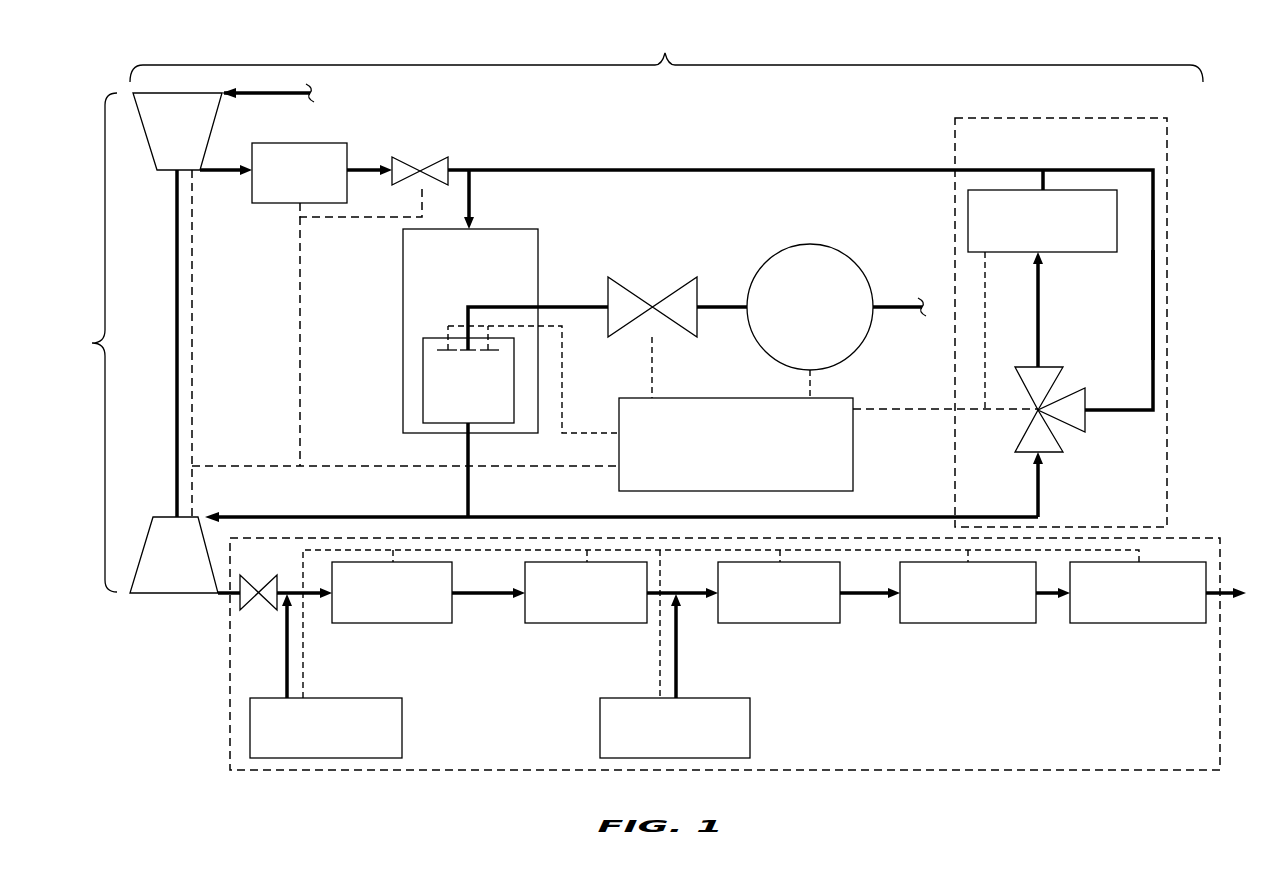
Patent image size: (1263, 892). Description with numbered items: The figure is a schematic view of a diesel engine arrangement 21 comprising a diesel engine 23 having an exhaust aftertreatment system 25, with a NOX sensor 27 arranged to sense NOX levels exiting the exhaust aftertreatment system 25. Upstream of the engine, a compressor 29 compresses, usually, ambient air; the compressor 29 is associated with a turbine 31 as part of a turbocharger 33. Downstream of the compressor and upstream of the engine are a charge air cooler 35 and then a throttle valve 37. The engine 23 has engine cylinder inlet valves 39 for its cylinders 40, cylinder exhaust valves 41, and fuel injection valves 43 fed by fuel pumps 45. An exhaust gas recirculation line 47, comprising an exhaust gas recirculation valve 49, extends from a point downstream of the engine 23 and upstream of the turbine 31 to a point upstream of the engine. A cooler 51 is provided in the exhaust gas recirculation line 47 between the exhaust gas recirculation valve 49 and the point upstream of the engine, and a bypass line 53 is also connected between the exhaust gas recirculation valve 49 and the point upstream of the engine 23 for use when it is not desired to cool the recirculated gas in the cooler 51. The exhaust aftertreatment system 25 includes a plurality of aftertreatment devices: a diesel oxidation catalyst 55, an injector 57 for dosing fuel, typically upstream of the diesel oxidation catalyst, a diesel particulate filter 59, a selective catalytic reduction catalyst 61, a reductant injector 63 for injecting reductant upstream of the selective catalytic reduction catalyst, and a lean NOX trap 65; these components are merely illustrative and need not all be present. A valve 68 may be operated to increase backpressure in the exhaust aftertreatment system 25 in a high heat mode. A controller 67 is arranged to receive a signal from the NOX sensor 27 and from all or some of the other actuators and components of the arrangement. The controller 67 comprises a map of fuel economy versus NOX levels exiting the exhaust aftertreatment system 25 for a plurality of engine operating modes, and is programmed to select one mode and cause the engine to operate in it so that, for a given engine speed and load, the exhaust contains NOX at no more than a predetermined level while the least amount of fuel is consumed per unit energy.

The diesel engine arrangement 21 is at (666, 55).
The diesel engine 23 is at (403, 253).
The exhaust aftertreatment system 25 is at (230, 665).
The NOX sensor 27 is at (1107, 623).
The compressor 29 is at (167, 141).
The turbine 31 is at (167, 567).
The turbocharger 33 is at (89, 342).
The charge air cooler 35 is at (322, 143).
The throttle valve 37 is at (409, 156).
The engine cylinder inlet valves 39 is at (433, 358).
The cylinders 40 is at (437, 423).
The cylinder exhaust valves 41 is at (488, 352).
The fuel injection valves 43 is at (630, 292).
The fuel pumps 45 is at (808, 244).
The exhaust gas recirculation line 47 is at (982, 112).
The exhaust gas recirculation valve 49 is at (1073, 430).
The cooler 51 is at (1090, 252).
The bypass line 53 is at (1153, 304).
The diesel oxidation catalyst 55 is at (362, 623).
The injector 57 is at (402, 712).
The diesel particulate filter 59 is at (555, 623).
The selective catalytic reduction catalyst 61 is at (745, 623).
The reductant injector 63 is at (750, 714).
The lean NOX trap 65 is at (930, 623).
The controller 67 is at (853, 462).
The valve 68 is at (262, 611).